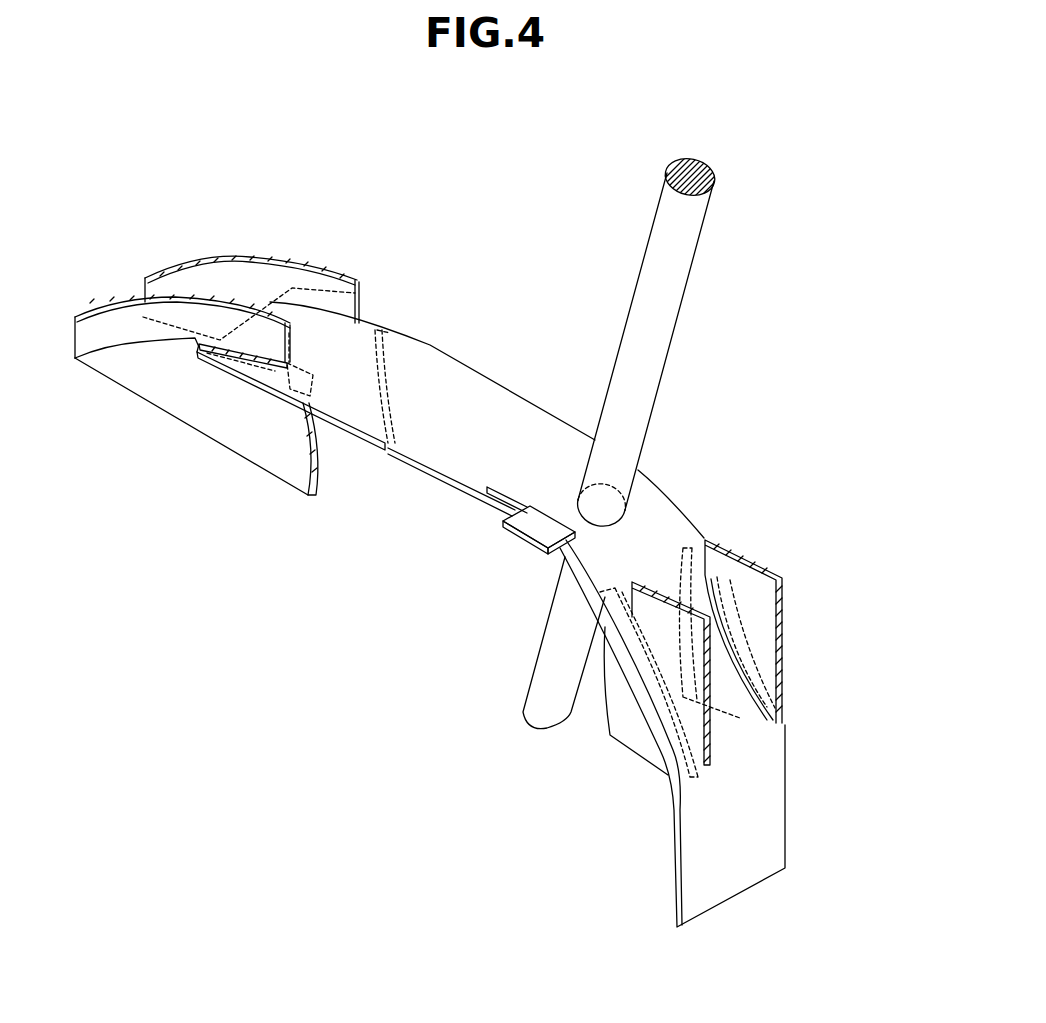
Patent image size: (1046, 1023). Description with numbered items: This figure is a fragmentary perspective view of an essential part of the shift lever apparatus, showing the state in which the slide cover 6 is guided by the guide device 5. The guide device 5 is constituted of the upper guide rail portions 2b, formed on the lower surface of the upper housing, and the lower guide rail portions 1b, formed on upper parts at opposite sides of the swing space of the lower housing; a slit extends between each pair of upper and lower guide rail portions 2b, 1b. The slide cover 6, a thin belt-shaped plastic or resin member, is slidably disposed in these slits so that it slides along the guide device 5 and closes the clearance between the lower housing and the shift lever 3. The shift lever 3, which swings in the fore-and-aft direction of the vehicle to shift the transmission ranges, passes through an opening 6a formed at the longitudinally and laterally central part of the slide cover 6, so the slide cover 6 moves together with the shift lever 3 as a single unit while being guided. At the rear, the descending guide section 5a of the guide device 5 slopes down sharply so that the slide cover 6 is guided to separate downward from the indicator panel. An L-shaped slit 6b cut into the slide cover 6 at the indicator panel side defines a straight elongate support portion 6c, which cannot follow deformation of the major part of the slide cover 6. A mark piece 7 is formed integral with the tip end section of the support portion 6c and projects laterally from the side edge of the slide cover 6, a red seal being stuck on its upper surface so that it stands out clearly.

The lower guide rail portions 1b is at (390, 313).
The upper guide rail portions 2b is at (384, 305).
The shift lever 3 is at (680, 237).
The guide device 5 is at (387, 313).
The descending guide section 5a is at (892, 689).
The slide cover 6 is at (762, 845).
The opening 6a is at (603, 493).
The L-shaped slit 6b is at (497, 490).
The support portion 6c is at (493, 500).
The mark piece 7 is at (530, 527).